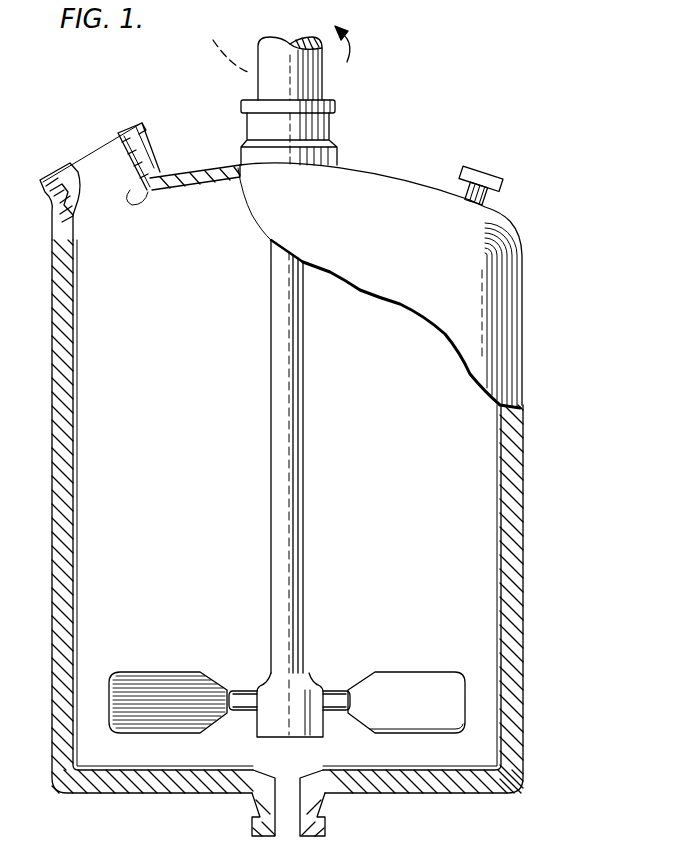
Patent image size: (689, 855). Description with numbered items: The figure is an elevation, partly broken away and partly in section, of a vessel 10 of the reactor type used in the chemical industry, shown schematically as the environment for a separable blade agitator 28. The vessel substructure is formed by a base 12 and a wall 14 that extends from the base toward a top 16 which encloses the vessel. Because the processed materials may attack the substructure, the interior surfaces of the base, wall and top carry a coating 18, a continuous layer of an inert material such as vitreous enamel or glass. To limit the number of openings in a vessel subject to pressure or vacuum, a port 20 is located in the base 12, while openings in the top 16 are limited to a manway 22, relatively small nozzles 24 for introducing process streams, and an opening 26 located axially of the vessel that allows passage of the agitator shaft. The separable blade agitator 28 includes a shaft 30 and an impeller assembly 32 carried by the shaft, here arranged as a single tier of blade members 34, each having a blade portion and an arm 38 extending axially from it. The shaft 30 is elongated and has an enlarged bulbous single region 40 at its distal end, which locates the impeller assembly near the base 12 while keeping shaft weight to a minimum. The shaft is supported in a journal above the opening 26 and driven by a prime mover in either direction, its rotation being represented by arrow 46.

The vessel 10 is at (548, 371).
The base 12 is at (200, 787).
The wall 14 is at (313, 492).
The top 16 is at (217, 163).
The coating 18 is at (150, 183).
The port 20 is at (320, 812).
The manway 22 is at (143, 127).
The nozzle 24 is at (505, 183).
The opening 26 is at (310, 131).
The separable blade agitator 28 is at (320, 455).
The shaft 30 is at (293, 427).
The impeller assembly 32 is at (287, 685).
The blade member 34 is at (167, 690).
The arm 38 is at (338, 712).
The single region 40 is at (268, 723).
The arrow 46 is at (343, 60).